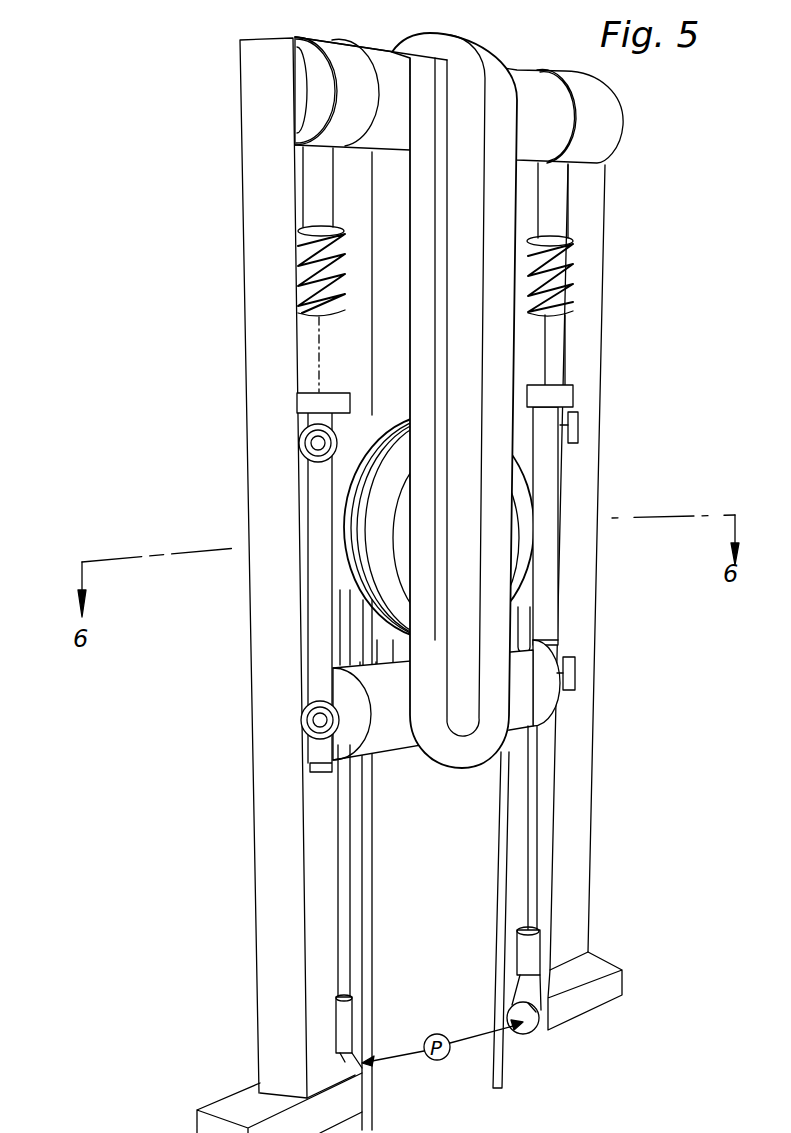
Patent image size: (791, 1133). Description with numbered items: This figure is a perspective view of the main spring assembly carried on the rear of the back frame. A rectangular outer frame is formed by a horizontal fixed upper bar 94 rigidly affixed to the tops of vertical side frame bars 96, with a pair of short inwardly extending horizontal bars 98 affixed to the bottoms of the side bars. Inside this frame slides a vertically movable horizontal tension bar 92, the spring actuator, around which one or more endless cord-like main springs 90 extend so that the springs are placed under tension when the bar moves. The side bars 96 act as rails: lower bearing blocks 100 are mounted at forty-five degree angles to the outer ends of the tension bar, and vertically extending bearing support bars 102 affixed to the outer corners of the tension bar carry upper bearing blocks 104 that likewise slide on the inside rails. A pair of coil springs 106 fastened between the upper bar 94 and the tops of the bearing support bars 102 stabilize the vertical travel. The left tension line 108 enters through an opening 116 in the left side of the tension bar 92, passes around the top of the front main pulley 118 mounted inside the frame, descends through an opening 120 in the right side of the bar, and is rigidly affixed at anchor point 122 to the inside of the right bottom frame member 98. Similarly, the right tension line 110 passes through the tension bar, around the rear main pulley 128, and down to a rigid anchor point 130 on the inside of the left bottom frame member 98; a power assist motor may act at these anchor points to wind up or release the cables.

The main springs 90 is at (537, 323).
The horizontal tension bar 92 is at (537, 686).
The fixed upper bar 94 is at (401, 82).
The vertical side frame bars 96 is at (260, 435).
The horizontal bars 98 is at (597, 997).
The lower bearing blocks 100 is at (303, 722).
The bearing support bars 102 is at (318, 638).
The upper bearing blocks 104 is at (313, 452).
The coil springs 106 is at (307, 267).
The left tension line 108 is at (370, 960).
The right tension line 110 is at (345, 882).
The opening 116 is at (378, 672).
The front main pulley 118 is at (412, 553).
The opening 120 is at (538, 638).
The anchor point 122 is at (530, 1025).
The rear main pulley 128 is at (350, 508).
The anchor point 130 is at (365, 1050).